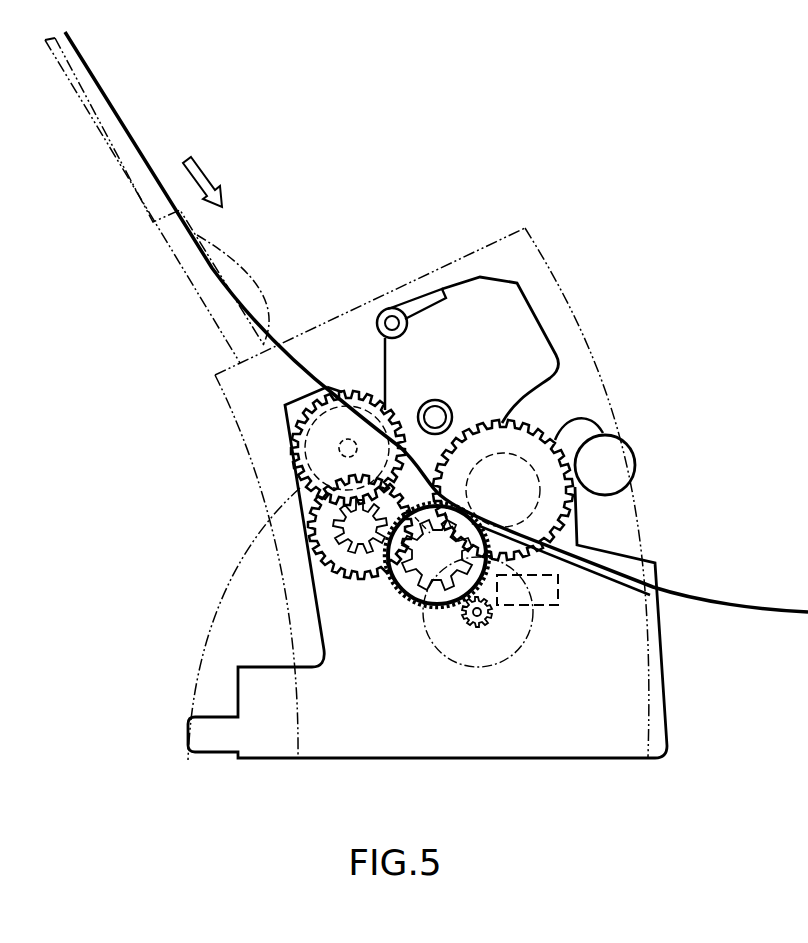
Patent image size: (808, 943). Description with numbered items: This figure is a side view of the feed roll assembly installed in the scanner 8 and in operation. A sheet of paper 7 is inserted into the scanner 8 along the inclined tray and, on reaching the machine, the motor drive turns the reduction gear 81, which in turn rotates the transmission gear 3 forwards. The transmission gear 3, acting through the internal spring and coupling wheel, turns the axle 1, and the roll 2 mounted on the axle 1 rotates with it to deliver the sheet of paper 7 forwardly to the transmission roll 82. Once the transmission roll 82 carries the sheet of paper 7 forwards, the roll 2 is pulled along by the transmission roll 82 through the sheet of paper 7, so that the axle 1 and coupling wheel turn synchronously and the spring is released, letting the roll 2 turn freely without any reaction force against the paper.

The axle 1 is at (346, 440).
The roll 2 is at (300, 428).
The transmission gear 3 is at (300, 492).
The sheet of paper 7 is at (120, 127).
The scanner 8 is at (545, 288).
The reduction gear 81 is at (367, 602).
The transmission roll 82 is at (538, 512).